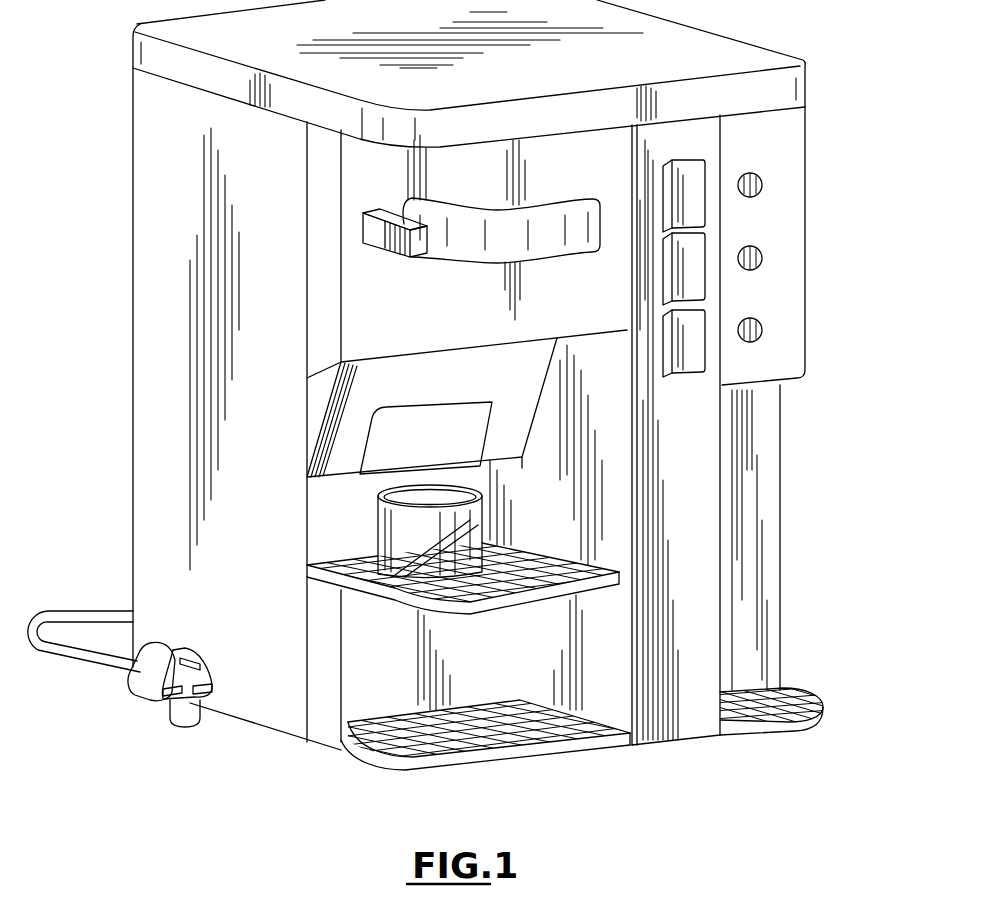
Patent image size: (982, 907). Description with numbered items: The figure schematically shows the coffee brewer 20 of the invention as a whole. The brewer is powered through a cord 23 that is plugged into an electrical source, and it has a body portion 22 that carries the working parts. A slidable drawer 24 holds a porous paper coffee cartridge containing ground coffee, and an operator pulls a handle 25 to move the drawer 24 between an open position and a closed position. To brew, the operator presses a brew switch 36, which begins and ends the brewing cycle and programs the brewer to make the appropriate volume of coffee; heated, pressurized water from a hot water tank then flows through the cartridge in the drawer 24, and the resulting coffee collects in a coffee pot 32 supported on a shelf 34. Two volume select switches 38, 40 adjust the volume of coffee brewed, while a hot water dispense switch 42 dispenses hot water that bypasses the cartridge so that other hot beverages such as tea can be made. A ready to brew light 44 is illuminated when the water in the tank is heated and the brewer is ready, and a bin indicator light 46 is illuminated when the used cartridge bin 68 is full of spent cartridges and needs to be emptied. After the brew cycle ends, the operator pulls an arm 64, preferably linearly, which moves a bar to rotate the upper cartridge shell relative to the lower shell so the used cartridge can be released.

The coffee brewer 20 is at (840, 95).
The body portion 22 is at (178, 231).
The cord 23 is at (70, 610).
The slidable drawer 24 is at (367, 306).
The handle 25 is at (472, 243).
The coffee pot 32 is at (388, 530).
The shelf 34 is at (522, 548).
The brew switch 36 is at (693, 195).
The volume select switch 38 is at (693, 268).
The volume select switch 40 is at (690, 362).
The hot water dispense switch 42 is at (770, 310).
The ready to brew light 44 is at (757, 177).
The bin indicator light 46 is at (757, 250).
The arm 64 is at (380, 242).
The used cartridge bin 68 is at (353, 394).